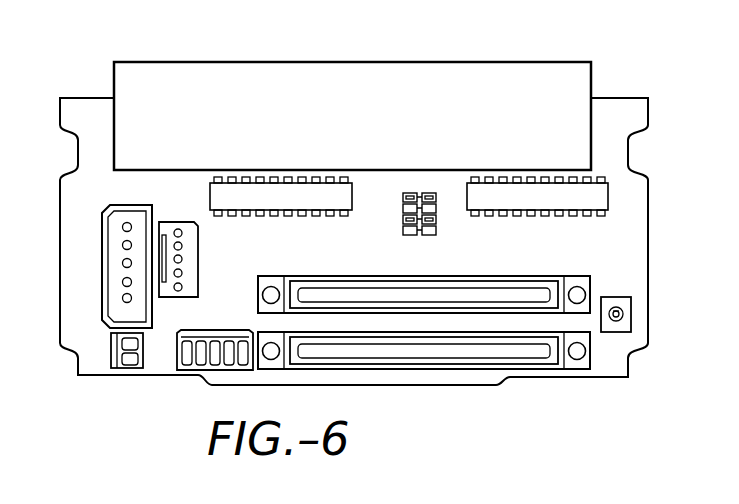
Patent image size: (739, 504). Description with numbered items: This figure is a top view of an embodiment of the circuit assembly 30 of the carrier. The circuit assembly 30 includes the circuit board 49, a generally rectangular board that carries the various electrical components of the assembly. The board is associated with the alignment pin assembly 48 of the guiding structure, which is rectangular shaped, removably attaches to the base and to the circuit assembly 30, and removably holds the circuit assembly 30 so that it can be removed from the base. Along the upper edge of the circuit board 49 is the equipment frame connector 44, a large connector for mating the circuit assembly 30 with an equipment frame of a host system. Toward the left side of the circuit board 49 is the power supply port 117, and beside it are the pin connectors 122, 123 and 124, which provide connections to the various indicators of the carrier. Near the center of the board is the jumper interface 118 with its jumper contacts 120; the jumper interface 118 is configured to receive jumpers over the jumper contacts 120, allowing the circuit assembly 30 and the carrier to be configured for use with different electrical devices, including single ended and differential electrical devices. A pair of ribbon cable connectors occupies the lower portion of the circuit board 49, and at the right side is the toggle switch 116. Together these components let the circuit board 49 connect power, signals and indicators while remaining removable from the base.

The circuit assembly 30 is at (95, 112).
The equipment frame connector 44 is at (550, 76).
The circuit board 49 is at (622, 106).
The alignment pin assembly 48 is at (80, 222).
The power supply port 117 is at (101, 266).
The pin connector 122 is at (196, 250).
The jumper interface 118 is at (425, 200).
The jumper contacts 120 is at (425, 220).
The toggle switch 116 is at (633, 300).
The pin connector 123 is at (110, 356).
The pin connector 124 is at (180, 356).